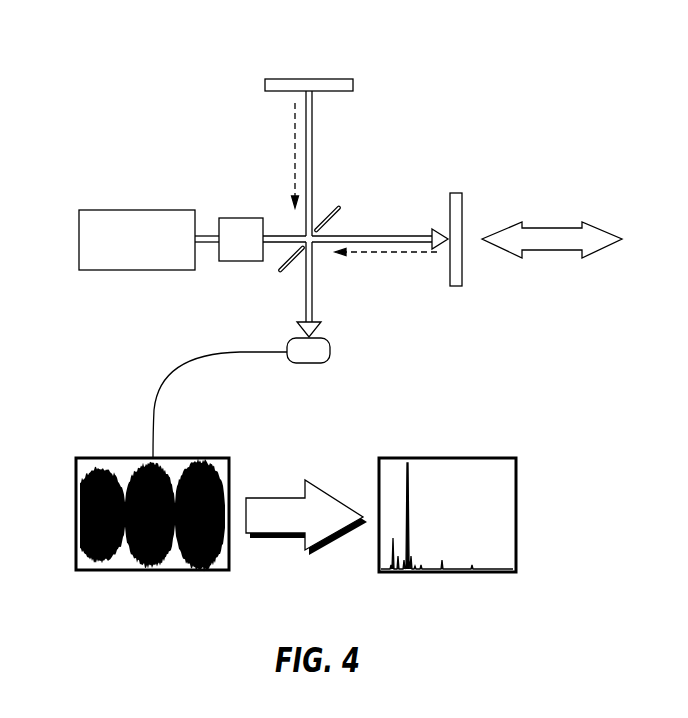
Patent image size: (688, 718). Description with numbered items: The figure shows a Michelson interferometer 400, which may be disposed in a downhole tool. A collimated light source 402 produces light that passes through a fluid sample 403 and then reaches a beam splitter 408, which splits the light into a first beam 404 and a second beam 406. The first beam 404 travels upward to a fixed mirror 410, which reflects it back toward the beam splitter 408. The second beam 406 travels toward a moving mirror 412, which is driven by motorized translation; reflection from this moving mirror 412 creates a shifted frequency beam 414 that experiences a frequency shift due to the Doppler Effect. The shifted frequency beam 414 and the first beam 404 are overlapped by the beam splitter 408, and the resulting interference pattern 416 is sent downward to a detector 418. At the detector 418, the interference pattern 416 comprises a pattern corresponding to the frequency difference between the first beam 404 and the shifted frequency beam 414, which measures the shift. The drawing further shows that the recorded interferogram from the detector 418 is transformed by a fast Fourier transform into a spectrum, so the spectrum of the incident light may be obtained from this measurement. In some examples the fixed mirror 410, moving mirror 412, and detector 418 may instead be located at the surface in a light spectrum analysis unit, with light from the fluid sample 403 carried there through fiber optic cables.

The Michelson interferometer 400 is at (498, 57).
The collimated light source 402 is at (90, 210).
The fluid sample 403 is at (228, 218).
The first beam 404 is at (294, 157).
The second beam 406 is at (365, 236).
The beam splitter 408 is at (284, 269).
The fixed mirror 410 is at (336, 79).
The moving mirror 412 is at (462, 273).
The shifted frequency beam 414 is at (379, 254).
The interference pattern 416 is at (306, 303).
The detector 418 is at (330, 350).